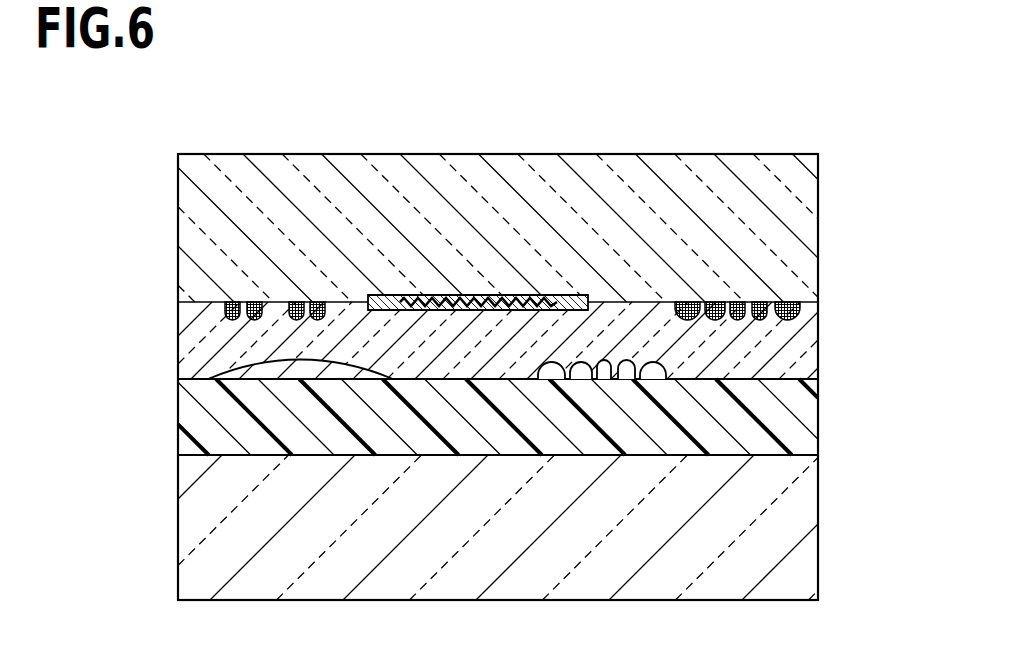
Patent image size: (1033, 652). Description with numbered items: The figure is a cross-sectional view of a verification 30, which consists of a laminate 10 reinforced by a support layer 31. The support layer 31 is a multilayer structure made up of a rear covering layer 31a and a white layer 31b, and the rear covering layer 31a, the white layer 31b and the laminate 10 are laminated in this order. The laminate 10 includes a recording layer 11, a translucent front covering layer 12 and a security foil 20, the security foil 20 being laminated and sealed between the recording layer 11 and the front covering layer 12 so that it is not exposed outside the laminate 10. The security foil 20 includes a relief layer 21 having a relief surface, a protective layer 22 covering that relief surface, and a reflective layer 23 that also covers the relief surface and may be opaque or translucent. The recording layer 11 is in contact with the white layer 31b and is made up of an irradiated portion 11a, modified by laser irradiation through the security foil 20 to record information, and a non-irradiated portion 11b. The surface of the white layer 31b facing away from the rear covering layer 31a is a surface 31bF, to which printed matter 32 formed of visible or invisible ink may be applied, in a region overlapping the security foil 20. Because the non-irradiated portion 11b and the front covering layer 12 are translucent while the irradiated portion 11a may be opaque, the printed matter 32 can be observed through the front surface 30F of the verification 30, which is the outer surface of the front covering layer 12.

The laminate 10 is at (479, 266).
The recording layer 11 is at (178, 325).
The irradiated portion 11a is at (225, 297).
The non-irradiated portion 11b is at (818, 324).
The front covering layer 12 is at (178, 227).
The security foil 20 is at (483, 293).
The relief layer 21 is at (392, 295).
The protective layer 22 is at (470, 311).
The reflective layer 23 is at (490, 296).
The verification 30 is at (821, 139).
The front surface 30F is at (537, 153).
The support layer 31 is at (560, 489).
The rear covering layer 31a is at (534, 527).
The white layer 31b is at (816, 415).
The surface 31bF is at (796, 372).
The printed matter 32 is at (210, 372).